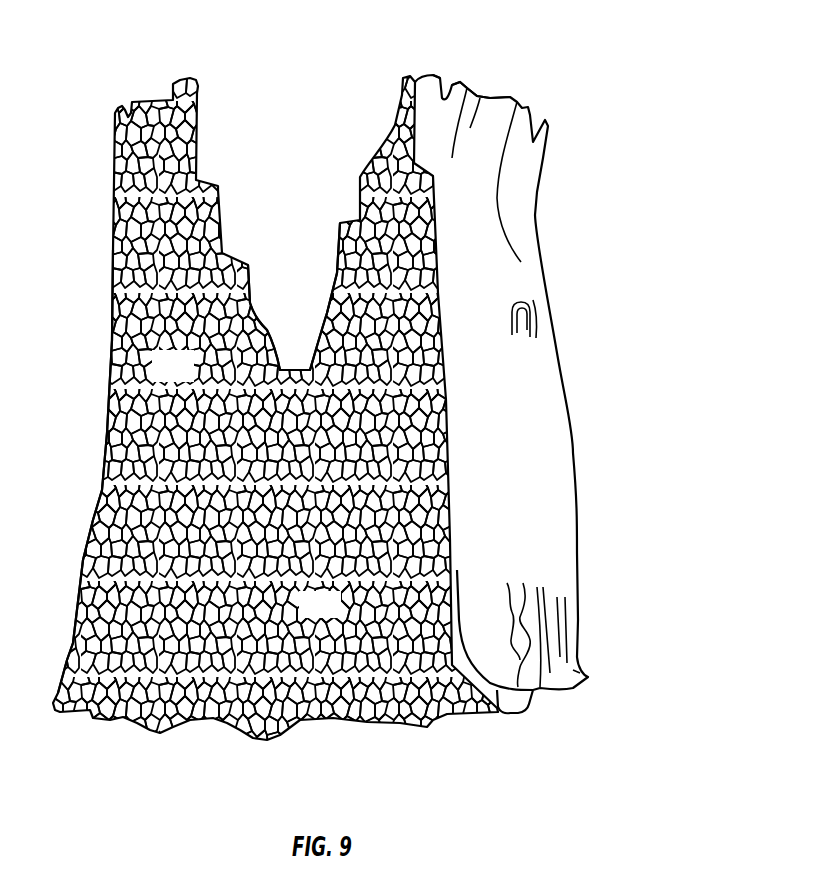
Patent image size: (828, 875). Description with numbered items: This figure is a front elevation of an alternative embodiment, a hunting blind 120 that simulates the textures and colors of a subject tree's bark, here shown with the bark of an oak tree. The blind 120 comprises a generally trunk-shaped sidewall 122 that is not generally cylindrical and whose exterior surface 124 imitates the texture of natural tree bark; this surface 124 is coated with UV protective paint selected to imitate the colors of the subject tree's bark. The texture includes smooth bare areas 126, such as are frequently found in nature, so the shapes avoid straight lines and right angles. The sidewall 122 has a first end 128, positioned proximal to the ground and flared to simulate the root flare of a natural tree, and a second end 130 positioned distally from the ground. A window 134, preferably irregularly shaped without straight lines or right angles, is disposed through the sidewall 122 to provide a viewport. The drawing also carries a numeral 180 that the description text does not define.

The hunting blind 120 is at (562, 82).
The trunk-shaped sidewall 122 is at (556, 353).
The exterior surface 124 is at (189, 379).
The bare areas 126 is at (520, 285).
The first end 128 is at (642, 727).
The second end 130 is at (622, 105).
The window 134 is at (270, 140).
The side edge 180 is at (112, 512).